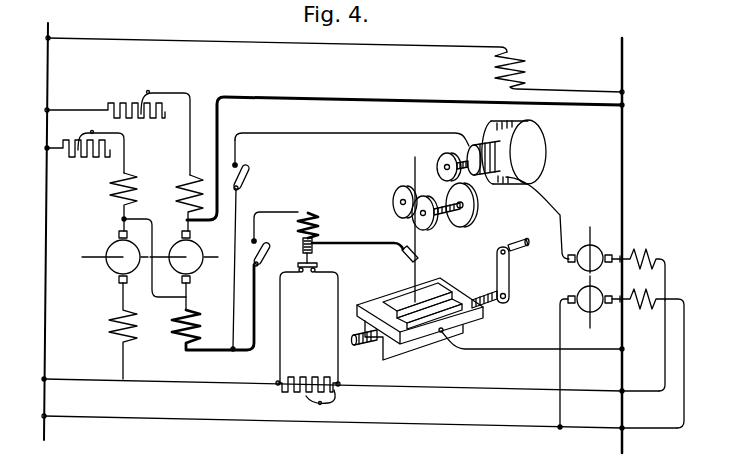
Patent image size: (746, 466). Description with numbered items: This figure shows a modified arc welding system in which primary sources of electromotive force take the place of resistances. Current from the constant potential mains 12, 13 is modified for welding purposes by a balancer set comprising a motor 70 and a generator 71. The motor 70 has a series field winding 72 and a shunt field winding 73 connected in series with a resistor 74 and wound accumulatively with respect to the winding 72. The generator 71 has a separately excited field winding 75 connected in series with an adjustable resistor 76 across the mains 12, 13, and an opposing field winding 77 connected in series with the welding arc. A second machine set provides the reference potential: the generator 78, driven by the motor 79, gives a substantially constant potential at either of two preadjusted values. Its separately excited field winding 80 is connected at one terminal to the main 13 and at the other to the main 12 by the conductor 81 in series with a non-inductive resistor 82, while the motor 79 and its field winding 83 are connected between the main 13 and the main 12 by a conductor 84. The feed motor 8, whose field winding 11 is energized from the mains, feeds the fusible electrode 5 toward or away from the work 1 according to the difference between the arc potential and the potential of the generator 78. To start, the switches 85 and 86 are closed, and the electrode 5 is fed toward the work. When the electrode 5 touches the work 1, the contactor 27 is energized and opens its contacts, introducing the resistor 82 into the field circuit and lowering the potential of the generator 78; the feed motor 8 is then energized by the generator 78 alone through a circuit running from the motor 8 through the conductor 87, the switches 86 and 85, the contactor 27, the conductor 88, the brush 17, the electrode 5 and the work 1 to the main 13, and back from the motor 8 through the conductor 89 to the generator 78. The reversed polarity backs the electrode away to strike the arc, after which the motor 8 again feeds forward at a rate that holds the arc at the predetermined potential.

The work 1 is at (451, 300).
The fusible electrode 5 is at (417, 267).
The feed motor 8 is at (536, 138).
The field winding 11 is at (526, 66).
The constant potential main 12 is at (47, 62).
The constant potential main 13 is at (623, 68).
The brush 17 is at (404, 259).
The contactor 27 is at (309, 212).
The motor 70 is at (112, 247).
The generator 71 is at (194, 248).
The series field winding 72 is at (107, 322).
The shunt field winding 73 is at (108, 188).
The resistor 74 is at (88, 160).
The separately excited field winding 75 is at (185, 181).
The adjustable resistor 76 is at (140, 118).
The opposing field winding 77 is at (200, 322).
The generator 78 is at (573, 266).
The motor 79 is at (586, 308).
The separately excited field winding 80 is at (641, 251).
The conductor 81 is at (480, 390).
The non-inductive resistor 82 is at (305, 377).
The field winding 83 is at (641, 311).
The conductor 84 is at (685, 385).
The switch 85 is at (273, 252).
The switch 86 is at (250, 179).
The conductor 87 is at (400, 134).
The conductor 88 is at (368, 243).
The conductor 89 is at (553, 191).